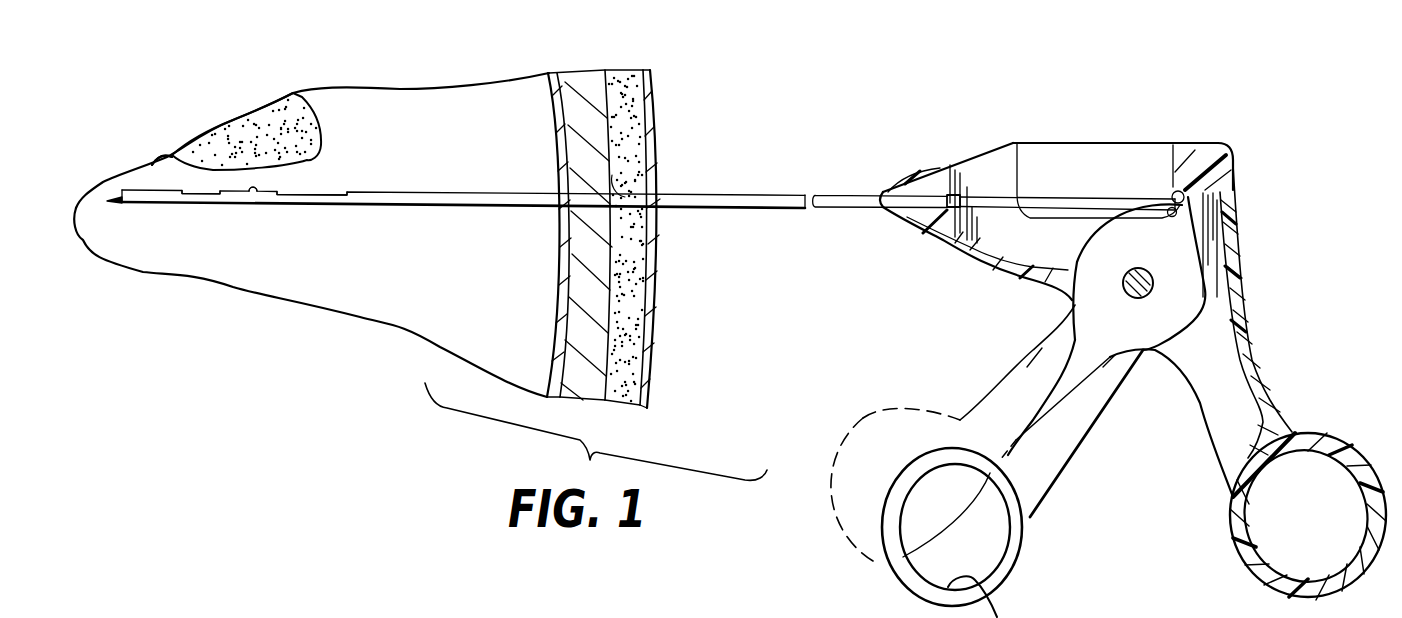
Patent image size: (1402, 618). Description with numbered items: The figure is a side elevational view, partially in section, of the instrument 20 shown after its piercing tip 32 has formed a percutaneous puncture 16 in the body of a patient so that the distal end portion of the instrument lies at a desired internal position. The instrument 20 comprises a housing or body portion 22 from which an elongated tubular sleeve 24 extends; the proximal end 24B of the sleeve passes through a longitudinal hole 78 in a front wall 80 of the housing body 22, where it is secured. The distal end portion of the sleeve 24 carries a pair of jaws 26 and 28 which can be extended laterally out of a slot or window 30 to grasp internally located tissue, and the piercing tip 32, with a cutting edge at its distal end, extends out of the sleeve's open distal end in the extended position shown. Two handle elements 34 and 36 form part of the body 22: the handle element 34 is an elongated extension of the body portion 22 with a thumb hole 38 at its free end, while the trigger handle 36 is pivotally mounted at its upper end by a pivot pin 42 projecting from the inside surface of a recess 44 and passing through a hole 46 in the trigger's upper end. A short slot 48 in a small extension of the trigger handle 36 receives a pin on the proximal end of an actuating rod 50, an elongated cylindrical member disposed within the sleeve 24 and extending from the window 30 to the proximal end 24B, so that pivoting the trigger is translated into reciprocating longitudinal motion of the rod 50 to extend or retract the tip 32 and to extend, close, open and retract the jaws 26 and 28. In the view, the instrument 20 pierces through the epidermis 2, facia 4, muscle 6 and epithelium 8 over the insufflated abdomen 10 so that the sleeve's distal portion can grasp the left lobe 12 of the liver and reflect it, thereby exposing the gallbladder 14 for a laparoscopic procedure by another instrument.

The epidermis 2 is at (657, 118).
The facia 4 is at (622, 97).
The muscle 6 is at (585, 85).
The epithelium 8 is at (553, 117).
The insufflated abdomen 10 is at (457, 262).
The left lobe of the liver 12 is at (297, 130).
The gallbladder 14 is at (160, 160).
The percutaneous puncture 16 is at (633, 197).
The instrument 20 is at (843, 172).
The housing or body portion 22 is at (1198, 167).
The elongated tubular sleeve 24 is at (755, 203).
The proximal end of the sleeve 24B is at (943, 195).
The jaw 26 is at (212, 201).
The jaw 28 is at (278, 201).
The slot or window 30 is at (333, 190).
The piercing tip 32 is at (112, 203).
The handle element 34 is at (1262, 344).
The handle element (trigger handle) 36 is at (1019, 380).
The thumb hole 38 is at (1330, 445).
The pivot pin 42 is at (1154, 283).
The recess 44 is at (993, 163).
The hole 46 is at (1150, 268).
The short slot 48 is at (1185, 207).
The actuating rod 50 is at (1103, 190).
The longitudinal hole 78 is at (940, 211).
The front wall 80 is at (947, 227).